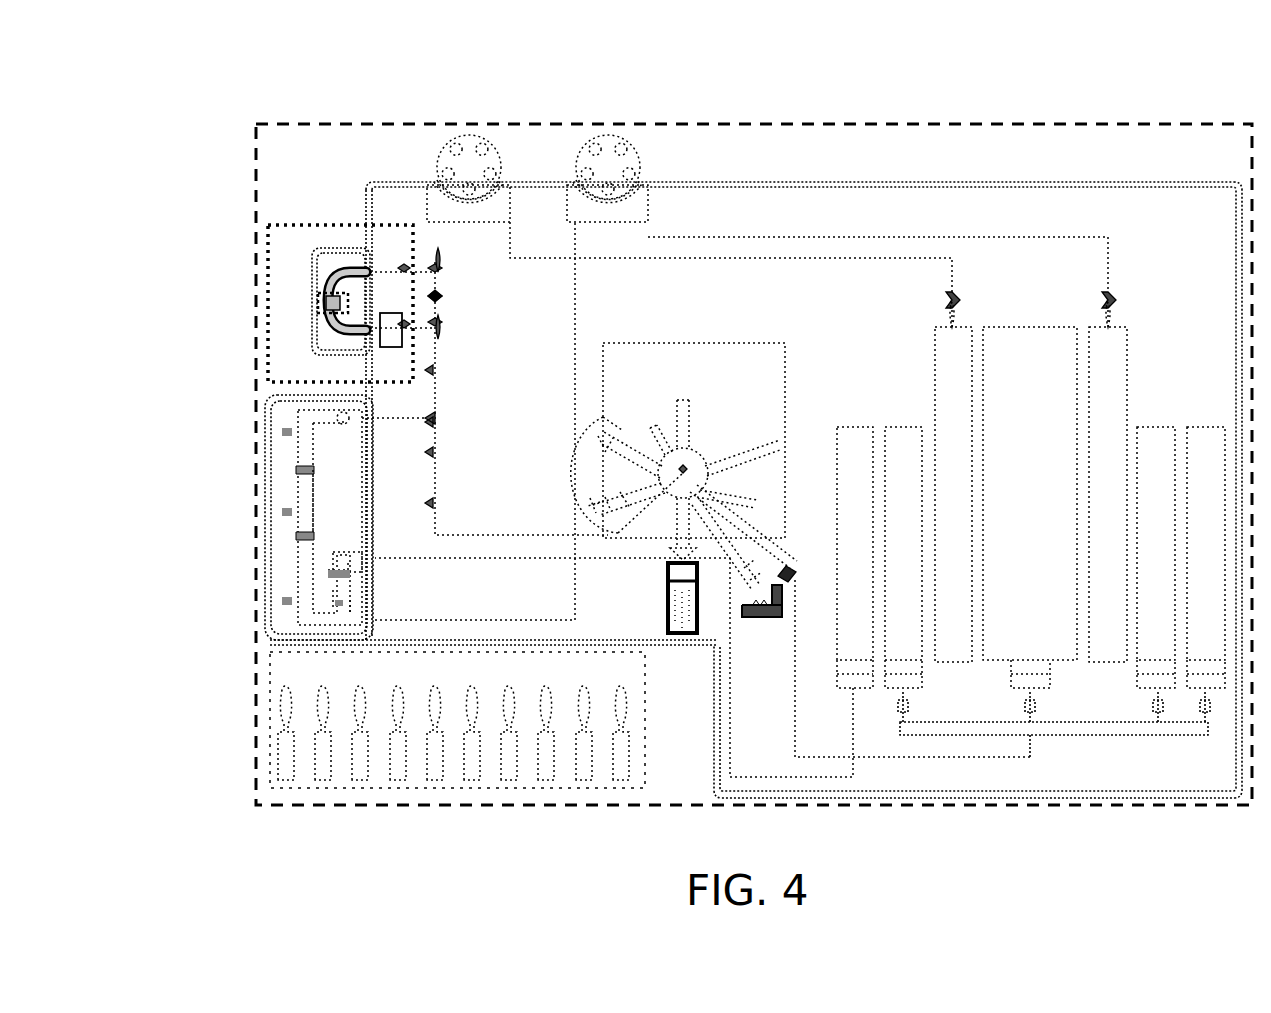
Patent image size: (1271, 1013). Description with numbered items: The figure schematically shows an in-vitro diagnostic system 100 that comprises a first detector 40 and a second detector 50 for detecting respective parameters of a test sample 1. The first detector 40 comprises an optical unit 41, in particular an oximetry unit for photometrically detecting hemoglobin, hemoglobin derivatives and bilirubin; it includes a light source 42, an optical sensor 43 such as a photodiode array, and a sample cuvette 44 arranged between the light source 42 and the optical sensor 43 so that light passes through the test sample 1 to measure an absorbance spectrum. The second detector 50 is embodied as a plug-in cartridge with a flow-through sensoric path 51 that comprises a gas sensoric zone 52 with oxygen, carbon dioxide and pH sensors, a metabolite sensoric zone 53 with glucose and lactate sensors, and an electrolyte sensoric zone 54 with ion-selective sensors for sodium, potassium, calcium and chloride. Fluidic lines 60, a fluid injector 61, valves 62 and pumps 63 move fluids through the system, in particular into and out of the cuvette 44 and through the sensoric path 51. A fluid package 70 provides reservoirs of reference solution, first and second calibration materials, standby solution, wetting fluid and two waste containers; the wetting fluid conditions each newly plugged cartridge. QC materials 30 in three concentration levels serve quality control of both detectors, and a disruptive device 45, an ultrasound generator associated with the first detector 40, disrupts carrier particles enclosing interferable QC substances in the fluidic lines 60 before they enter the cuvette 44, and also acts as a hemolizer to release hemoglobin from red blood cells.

The in-vitro diagnostic system 100 is at (908, 112).
The pumps 63 is at (489, 140).
The first detector 40 is at (420, 342).
The optical unit 41 is at (303, 222).
The sample cuvette 44 is at (420, 342).
The light source 42 is at (322, 281).
The optical sensor 43 is at (318, 305).
The test sample 1 is at (327, 330).
The valves 62 is at (442, 301).
The fluidic lines 60 is at (435, 360).
The disruptive device 45 is at (400, 350).
The gas sensoric zone 52 is at (300, 437).
The metabolite sensoric zone 53 is at (302, 497).
The flow-through sensoric path 51 is at (298, 546).
The electrolyte sensoric zone 54 is at (300, 575).
The second detector 50 is at (253, 517).
The fluid injector 61 is at (698, 343).
The fluid package 70 is at (1140, 304).
The QC materials 30 is at (583, 780).